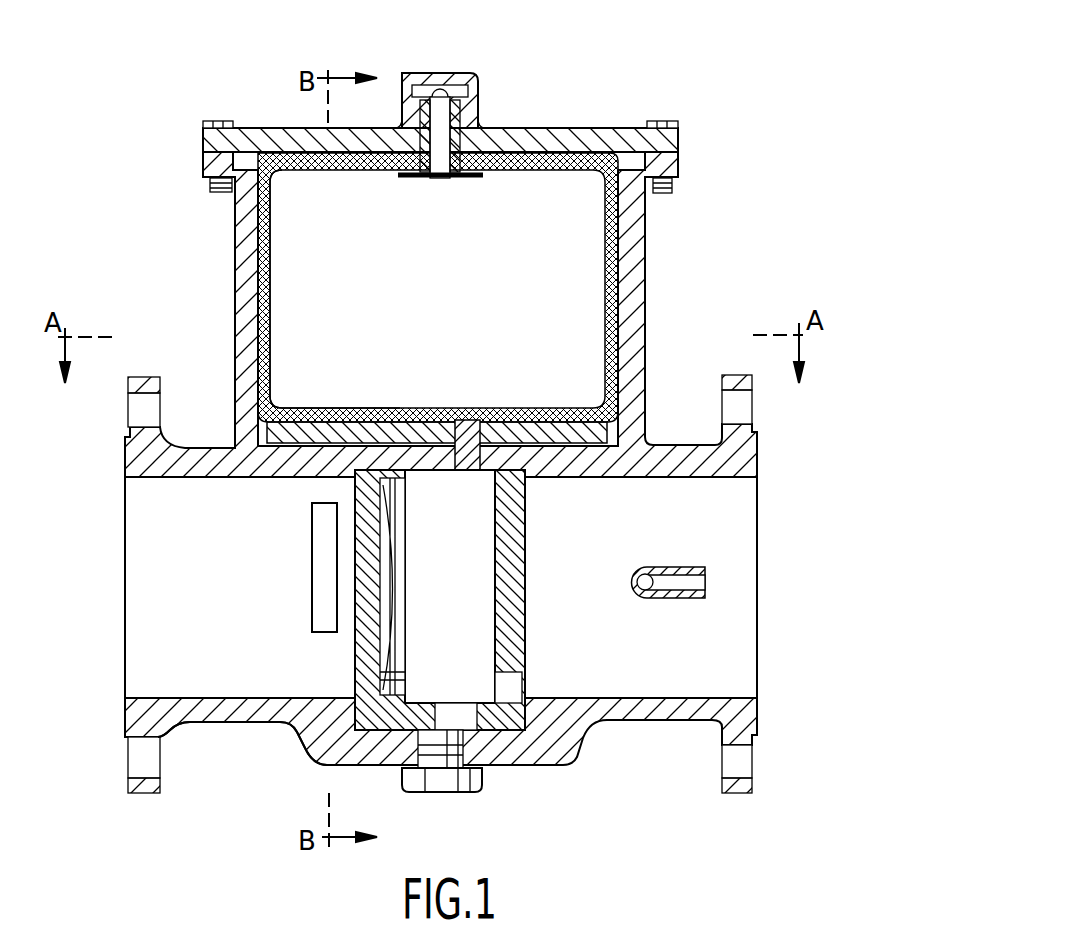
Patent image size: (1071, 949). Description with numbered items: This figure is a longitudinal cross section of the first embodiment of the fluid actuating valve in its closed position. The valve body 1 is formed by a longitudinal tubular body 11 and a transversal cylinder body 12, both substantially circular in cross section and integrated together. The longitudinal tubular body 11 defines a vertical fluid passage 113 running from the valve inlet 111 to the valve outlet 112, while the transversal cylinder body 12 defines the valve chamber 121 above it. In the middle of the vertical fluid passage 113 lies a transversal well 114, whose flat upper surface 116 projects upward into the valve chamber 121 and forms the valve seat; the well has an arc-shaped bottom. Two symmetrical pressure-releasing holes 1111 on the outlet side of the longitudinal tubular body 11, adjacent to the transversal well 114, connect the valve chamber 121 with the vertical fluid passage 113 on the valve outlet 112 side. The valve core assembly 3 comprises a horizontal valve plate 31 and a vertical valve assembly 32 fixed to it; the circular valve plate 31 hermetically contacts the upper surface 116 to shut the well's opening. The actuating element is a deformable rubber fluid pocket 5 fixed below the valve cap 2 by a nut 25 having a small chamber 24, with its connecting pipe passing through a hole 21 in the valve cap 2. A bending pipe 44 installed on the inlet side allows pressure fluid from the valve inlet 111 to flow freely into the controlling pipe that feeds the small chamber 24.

The valve body 1 is at (660, 303).
The valve cap 2 is at (593, 118).
The valve core assembly 3 is at (452, 412).
The fluid pocket 5 is at (497, 178).
The longitudinal tubular body 11 is at (303, 720).
The transversal cylinder body 12 is at (632, 228).
The hole 21 is at (468, 118).
The small chamber 24 is at (423, 90).
The nut 25 is at (417, 110).
The valve plate 31 is at (590, 428).
The vertical valve assembly 32 is at (475, 567).
The bending pipe 44 is at (692, 598).
The valve inlet 111 is at (741, 681).
The valve outlet 112 is at (133, 520).
The vertical fluid passage 113 is at (573, 630).
The transversal well 114 is at (527, 680).
The upper surface 116 is at (352, 457).
The valve chamber 121 is at (293, 372).
The pressure-releasing holes 1111 is at (325, 608).